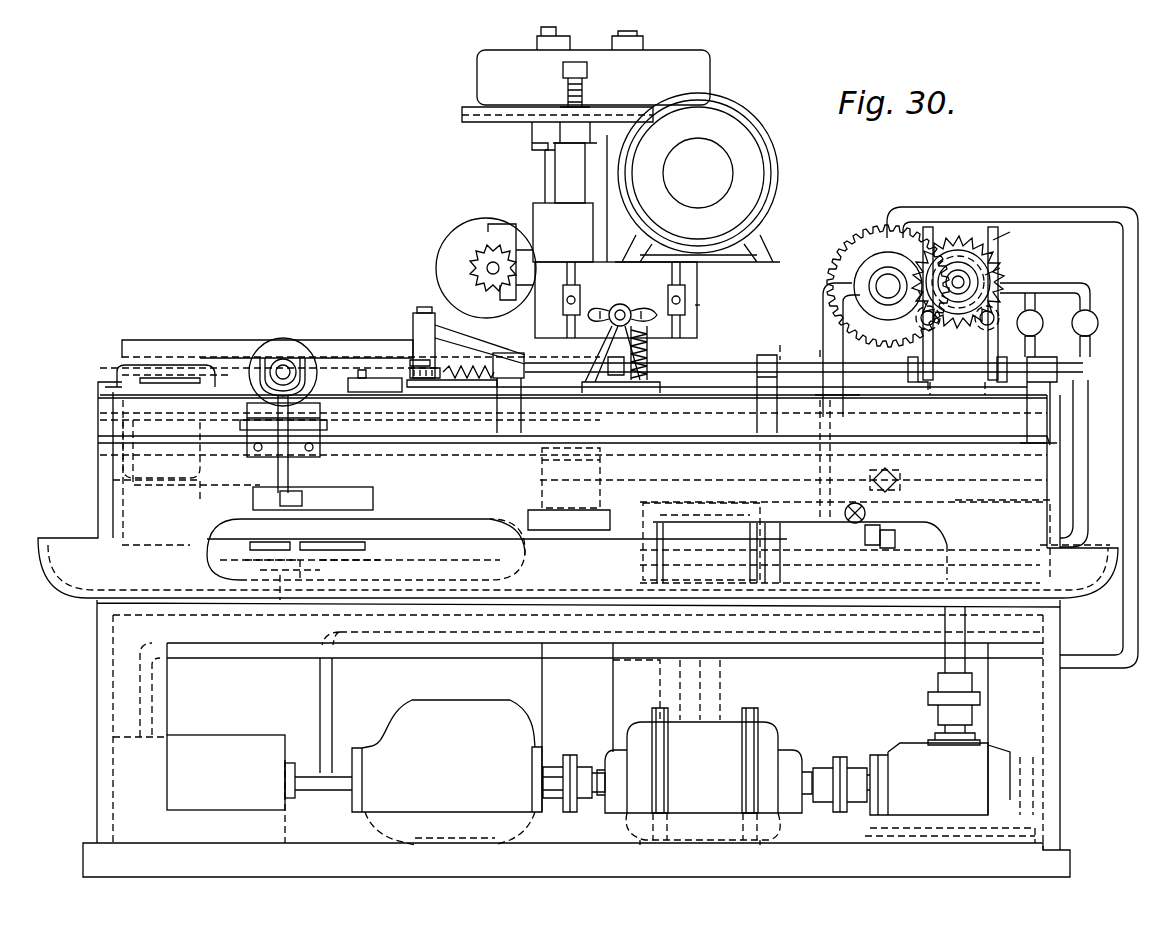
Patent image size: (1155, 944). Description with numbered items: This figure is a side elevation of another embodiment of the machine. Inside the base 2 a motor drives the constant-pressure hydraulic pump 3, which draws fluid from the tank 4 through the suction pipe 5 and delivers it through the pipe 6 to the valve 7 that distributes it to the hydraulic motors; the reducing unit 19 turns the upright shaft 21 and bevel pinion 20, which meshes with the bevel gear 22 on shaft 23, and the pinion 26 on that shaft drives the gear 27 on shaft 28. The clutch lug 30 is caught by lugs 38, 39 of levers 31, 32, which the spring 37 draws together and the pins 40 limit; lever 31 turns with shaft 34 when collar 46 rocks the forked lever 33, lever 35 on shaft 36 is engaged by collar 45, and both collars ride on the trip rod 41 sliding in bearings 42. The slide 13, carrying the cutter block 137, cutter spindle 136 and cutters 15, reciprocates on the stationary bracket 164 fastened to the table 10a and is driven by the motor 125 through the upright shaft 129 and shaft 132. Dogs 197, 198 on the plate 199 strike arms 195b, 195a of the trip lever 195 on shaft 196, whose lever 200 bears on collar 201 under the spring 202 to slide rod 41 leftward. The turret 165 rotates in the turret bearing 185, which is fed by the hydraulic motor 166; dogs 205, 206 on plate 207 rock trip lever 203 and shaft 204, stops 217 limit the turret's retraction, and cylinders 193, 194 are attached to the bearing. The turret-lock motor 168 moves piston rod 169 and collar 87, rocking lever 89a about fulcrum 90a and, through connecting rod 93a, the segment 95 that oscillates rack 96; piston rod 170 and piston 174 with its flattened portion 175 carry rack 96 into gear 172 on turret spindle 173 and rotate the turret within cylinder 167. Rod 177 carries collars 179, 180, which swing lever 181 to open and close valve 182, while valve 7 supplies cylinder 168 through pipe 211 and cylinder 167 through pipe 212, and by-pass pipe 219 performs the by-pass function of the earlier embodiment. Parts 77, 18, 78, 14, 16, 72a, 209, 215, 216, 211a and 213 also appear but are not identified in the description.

The upright shaft 129 is at (630, 32).
The shaft 132 is at (540, 30).
The adjusting screw 77 is at (588, 72).
The spring 18 is at (582, 96).
The bracket 78 is at (532, 143).
The post 14 is at (570, 173).
The slide 13 is at (563, 232).
The motor 125 is at (697, 177).
The dog 197 is at (560, 300).
The dog 198 is at (686, 290).
The plate 199 is at (697, 318).
The shaft 196 is at (622, 304).
The trip lever 195 is at (632, 304).
The arm 195b is at (607, 302).
The arm 195a is at (660, 302).
The collar 201 is at (604, 382).
The lever 200 is at (629, 382).
The spring 202 is at (647, 350).
The cutter block 137 is at (455, 225).
The cutters 15 is at (478, 253).
The cutter spindle 136 is at (489, 273).
The trip rod 41 is at (804, 376).
The bearings 42 is at (1040, 354).
The gear 27 is at (845, 240).
The valve 7 is at (870, 262).
The shaft 28 is at (888, 286).
The spring 37 is at (958, 238).
The bevel pinion 20 is at (990, 280).
The bevel gear 22 is at (970, 280).
The pinion 26 is at (962, 272).
The lever 32 is at (926, 240).
The shaft 23 is at (994, 240).
The lever 31 is at (1010, 232).
The lug 38 is at (1005, 268).
The clutch lug 30 is at (999, 294).
The lug 39 is at (925, 270).
The shaft 36 is at (921, 320).
The pipe 72a is at (1062, 207).
The pipe 209 is at (826, 280).
The stationary bracket 164 is at (840, 395).
The shaft 34 is at (1000, 300).
The pins 40 is at (908, 365).
The collar 46 is at (996, 381).
The collar 45 is at (925, 385).
The lever 35 is at (929, 399).
The lever 33 is at (981, 399).
The pipe 216 is at (905, 555).
The turret 165 is at (140, 340).
The hydraulic motor 168 is at (300, 340).
The collar 87 is at (272, 360).
The piston rod 169 is at (283, 360).
The lever 89a is at (320, 450).
The fulcrum 90a is at (298, 411).
The connecting rod 93a is at (373, 498).
The shaft 204 is at (418, 305).
The trip lever 203 is at (455, 367).
The dog 205 is at (425, 368).
The plate 207 is at (412, 362).
The dog 206 is at (362, 372).
The turret bearing 185 is at (150, 367).
The stops 217 is at (98, 385).
The pipe 215 is at (100, 419).
The shaft 211a is at (98, 438).
The pipe 211 is at (1050, 445).
The pipe 212 is at (1088, 468).
The table 10a is at (98, 462).
The cylinder 194 is at (175, 462).
The cylinder 193 is at (170, 475).
The gear 172 is at (215, 530).
The piston rod 170 is at (460, 555).
The turret spindle 173 is at (330, 570).
The rack 96 is at (390, 555).
The segment 95 is at (270, 582).
The frame 16 is at (542, 478).
The hydraulic motor 166 is at (701, 532).
The by-pass pipe 219 is at (888, 490).
The pipe 213 is at (1000, 510).
The valve 182 is at (850, 522).
The lever 181 is at (857, 522).
The collar 179 is at (870, 548).
The collar 180 is at (890, 550).
The rod 177 is at (785, 550).
The base 2 is at (1060, 708).
The pipe 6 is at (332, 694).
The tank 4 is at (199, 789).
The suction pipe 5 is at (300, 777).
The hydraulic pump 3 is at (447, 772).
The reducing unit 19 is at (950, 793).
The upright shaft 21 is at (945, 668).
The hydraulic motor 167 is at (675, 600).
The flattened portion 175 is at (705, 600).
The piston 174 is at (732, 600).